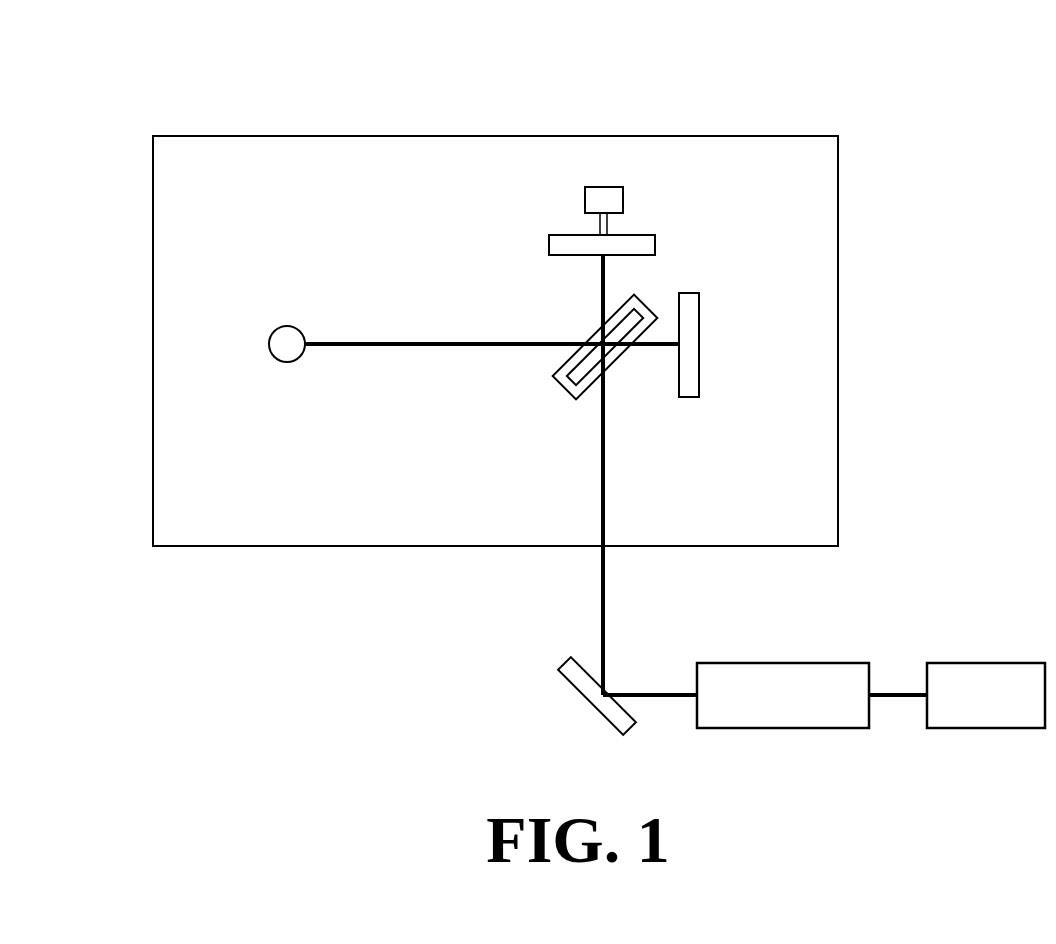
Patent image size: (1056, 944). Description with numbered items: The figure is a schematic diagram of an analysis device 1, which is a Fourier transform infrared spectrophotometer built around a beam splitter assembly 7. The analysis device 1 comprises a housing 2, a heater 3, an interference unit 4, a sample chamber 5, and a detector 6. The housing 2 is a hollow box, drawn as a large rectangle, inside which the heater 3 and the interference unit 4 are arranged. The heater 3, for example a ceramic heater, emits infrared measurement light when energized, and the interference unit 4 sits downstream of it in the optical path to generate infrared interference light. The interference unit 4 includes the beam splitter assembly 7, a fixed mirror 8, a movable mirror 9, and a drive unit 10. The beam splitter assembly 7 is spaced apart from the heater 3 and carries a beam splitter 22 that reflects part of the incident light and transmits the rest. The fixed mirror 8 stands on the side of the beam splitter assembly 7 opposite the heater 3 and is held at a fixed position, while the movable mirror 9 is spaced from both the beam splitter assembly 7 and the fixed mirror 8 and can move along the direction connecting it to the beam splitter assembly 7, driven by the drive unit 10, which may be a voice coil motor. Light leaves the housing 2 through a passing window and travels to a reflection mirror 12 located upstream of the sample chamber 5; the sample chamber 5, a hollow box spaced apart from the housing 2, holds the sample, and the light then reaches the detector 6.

The analysis device 1 is at (810, 97).
The housing 2 is at (838, 244).
The heater 3 is at (290, 328).
The interference unit 4 is at (682, 263).
The sample chamber 5 is at (762, 663).
The detector 6 is at (967, 663).
The beam splitter assembly 7 is at (553, 378).
The fixed mirror 8 is at (700, 320).
The movable mirror 9 is at (549, 241).
The drive unit 10 is at (623, 197).
The reflection mirror 12 is at (572, 684).
The beam splitter 22 is at (565, 397).